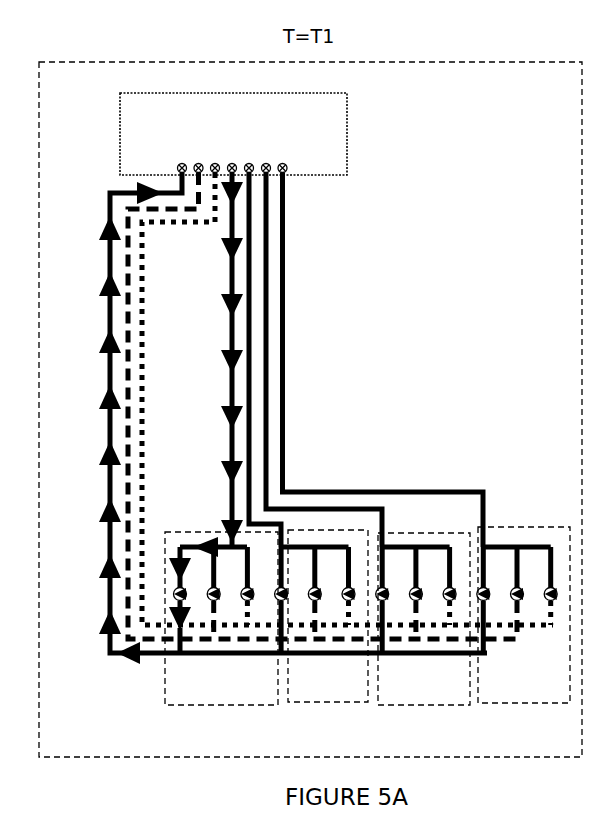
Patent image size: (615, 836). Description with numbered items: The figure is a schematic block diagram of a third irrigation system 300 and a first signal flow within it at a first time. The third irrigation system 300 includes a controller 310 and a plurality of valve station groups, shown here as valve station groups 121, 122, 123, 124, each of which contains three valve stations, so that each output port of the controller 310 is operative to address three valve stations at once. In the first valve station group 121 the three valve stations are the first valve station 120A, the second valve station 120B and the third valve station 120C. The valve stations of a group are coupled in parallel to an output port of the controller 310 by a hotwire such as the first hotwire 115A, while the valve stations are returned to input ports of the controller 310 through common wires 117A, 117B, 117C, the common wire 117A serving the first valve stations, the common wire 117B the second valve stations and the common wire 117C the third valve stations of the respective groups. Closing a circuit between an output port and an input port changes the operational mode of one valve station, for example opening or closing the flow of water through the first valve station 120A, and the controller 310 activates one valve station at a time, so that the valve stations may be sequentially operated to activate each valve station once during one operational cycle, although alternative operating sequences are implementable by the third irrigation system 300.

The third irrigation system 300 is at (240, 62).
The controller 310 is at (347, 143).
The common wire 117A is at (110, 215).
The common wire 117B is at (128, 225).
The common wire 117C is at (142, 300).
The first hotwire 115A is at (228, 445).
The first valve station 120A is at (150, 640).
The second valve station 120B is at (203, 640).
The third valve station 120C is at (245, 628).
The first valve station group 121 is at (195, 646).
The second valve station group 122 is at (310, 702).
The third valve station group 123 is at (418, 705).
The fourth valve station group 124 is at (523, 703).